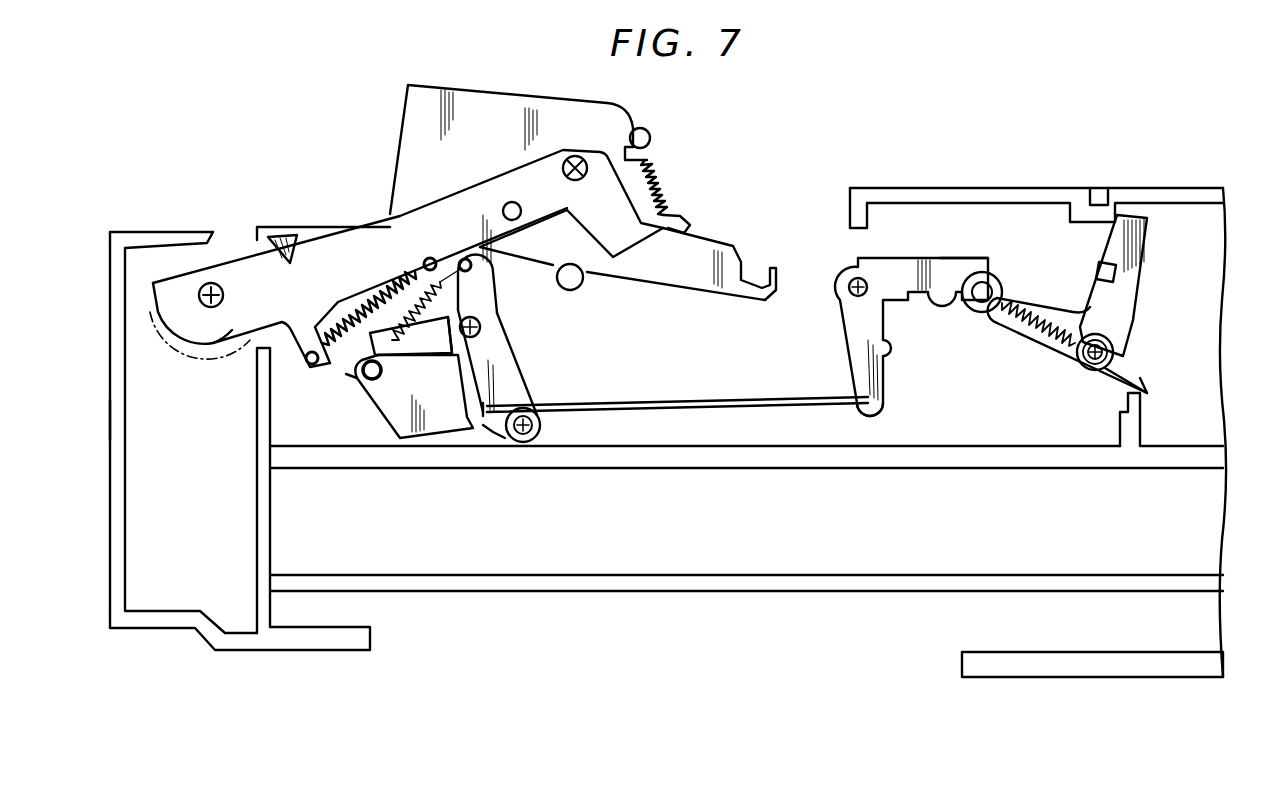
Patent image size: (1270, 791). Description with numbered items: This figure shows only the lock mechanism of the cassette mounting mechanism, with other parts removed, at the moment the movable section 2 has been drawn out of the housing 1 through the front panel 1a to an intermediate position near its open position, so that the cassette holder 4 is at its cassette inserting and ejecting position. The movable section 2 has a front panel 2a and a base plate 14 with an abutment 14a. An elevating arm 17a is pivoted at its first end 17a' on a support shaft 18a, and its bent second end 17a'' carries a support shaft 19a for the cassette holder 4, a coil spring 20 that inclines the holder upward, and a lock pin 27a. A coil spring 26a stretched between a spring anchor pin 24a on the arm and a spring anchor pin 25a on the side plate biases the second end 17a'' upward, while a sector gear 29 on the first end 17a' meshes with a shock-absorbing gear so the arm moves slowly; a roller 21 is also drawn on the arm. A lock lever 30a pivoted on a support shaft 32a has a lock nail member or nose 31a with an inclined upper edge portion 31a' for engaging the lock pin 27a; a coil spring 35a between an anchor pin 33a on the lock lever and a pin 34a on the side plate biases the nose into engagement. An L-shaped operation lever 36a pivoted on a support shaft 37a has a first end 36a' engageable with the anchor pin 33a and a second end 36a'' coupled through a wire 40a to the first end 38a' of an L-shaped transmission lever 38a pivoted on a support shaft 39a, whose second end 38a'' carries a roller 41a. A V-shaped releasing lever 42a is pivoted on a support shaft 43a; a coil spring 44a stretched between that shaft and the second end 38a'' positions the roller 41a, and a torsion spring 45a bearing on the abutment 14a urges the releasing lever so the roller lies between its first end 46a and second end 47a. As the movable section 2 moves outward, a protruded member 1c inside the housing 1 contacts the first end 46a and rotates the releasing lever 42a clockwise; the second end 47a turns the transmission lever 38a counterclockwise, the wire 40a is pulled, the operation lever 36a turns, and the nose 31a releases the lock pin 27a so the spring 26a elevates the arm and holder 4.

The housing 1 is at (960, 188).
The front panel 1a is at (850, 212).
The protruded member 1c is at (1100, 190).
The movable section 2 is at (72, 360).
The front panel 2a is at (110, 421).
The cassette holder 4 is at (641, 125).
The base plate 14 is at (699, 462).
The abutment 14a is at (1141, 430).
The elevating arm 17a is at (408, 257).
The first end of elevating arm 17a' is at (231, 359).
The second end of elevating arm 17a'' is at (628, 264).
The support shaft 18a is at (221, 290).
The support shaft 19a is at (566, 164).
The coil spring 20 is at (668, 204).
The roller 21 is at (578, 288).
The spring anchor pin 24a is at (308, 358).
The spring anchor pin 25a is at (425, 262).
The coil spring 26a is at (338, 308).
The lock pin 27a is at (521, 212).
The sector gear 29 is at (202, 345).
The lock lever 30a is at (378, 402).
The lock nail member 31a is at (517, 359).
The upper edge portion of nose 31a' is at (506, 284).
The support shaft 32a is at (542, 432).
The anchor pin 33a is at (366, 378).
The pin 34a is at (464, 260).
The coil spring 35a is at (412, 356).
The operation lever 36a is at (446, 371).
The first end of operation lever 36a' is at (323, 404).
The second end of operation lever 36a'' is at (492, 464).
The support shaft 37a is at (500, 340).
The transmission lever 38a is at (911, 337).
The first end of transmission lever 38a' is at (896, 424).
The second end of transmission lever 38a'' is at (962, 241).
The support shaft 39a is at (850, 294).
The wire 40a is at (706, 398).
The roller 41a is at (994, 282).
The releasing lever 42a is at (1135, 322).
The support shaft 43a is at (1082, 366).
The coil spring 44a is at (1054, 312).
The torsion spring 45a is at (1130, 376).
The first end of releasing lever 46a is at (1148, 226).
The second end of releasing lever 47a is at (998, 326).